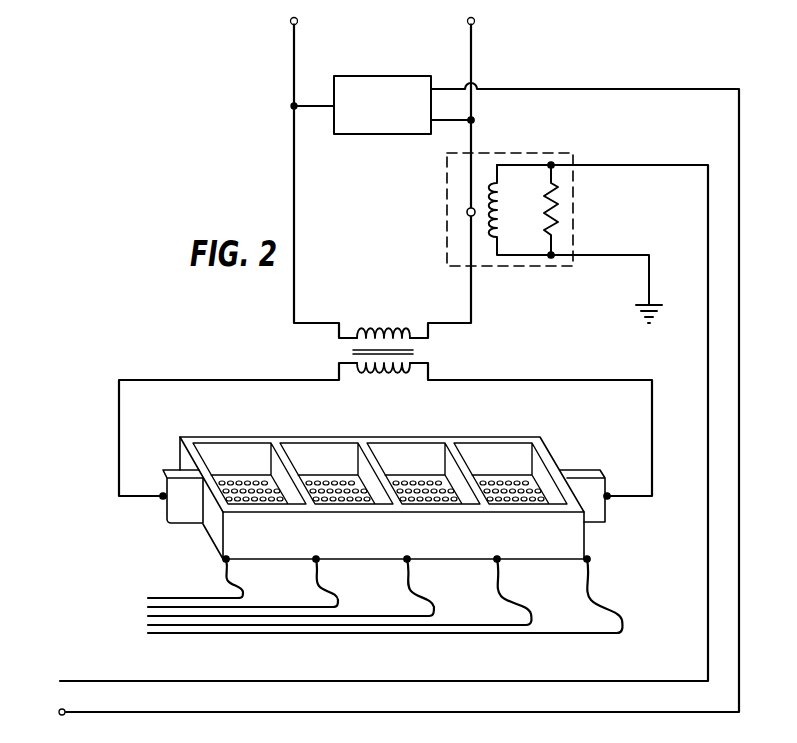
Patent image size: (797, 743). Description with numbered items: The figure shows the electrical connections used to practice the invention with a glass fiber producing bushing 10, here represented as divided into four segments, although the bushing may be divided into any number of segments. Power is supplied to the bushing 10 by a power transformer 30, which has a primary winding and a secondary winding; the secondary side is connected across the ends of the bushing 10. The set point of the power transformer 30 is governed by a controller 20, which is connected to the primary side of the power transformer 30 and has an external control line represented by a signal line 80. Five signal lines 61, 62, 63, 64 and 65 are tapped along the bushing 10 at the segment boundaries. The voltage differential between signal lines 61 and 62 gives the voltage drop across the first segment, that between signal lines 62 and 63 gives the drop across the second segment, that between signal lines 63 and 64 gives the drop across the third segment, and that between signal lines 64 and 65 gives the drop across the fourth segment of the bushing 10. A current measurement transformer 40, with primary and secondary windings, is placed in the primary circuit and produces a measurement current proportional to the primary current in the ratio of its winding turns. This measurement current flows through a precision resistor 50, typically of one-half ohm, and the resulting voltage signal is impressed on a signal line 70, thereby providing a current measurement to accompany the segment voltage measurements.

The bushing 10 is at (424, 434).
The controller 20 is at (363, 76).
The power transformer 30 is at (385, 413).
The current measurement transformer 40 is at (482, 193).
The precision resistor 50 is at (556, 207).
The signal line 61 is at (168, 598).
The signal line 62 is at (148, 607).
The signal line 63 is at (148, 616).
The signal line 64 is at (148, 625).
The signal line 65 is at (150, 634).
The signal line 70 is at (365, 429).
The signal line 80 is at (380, 404).